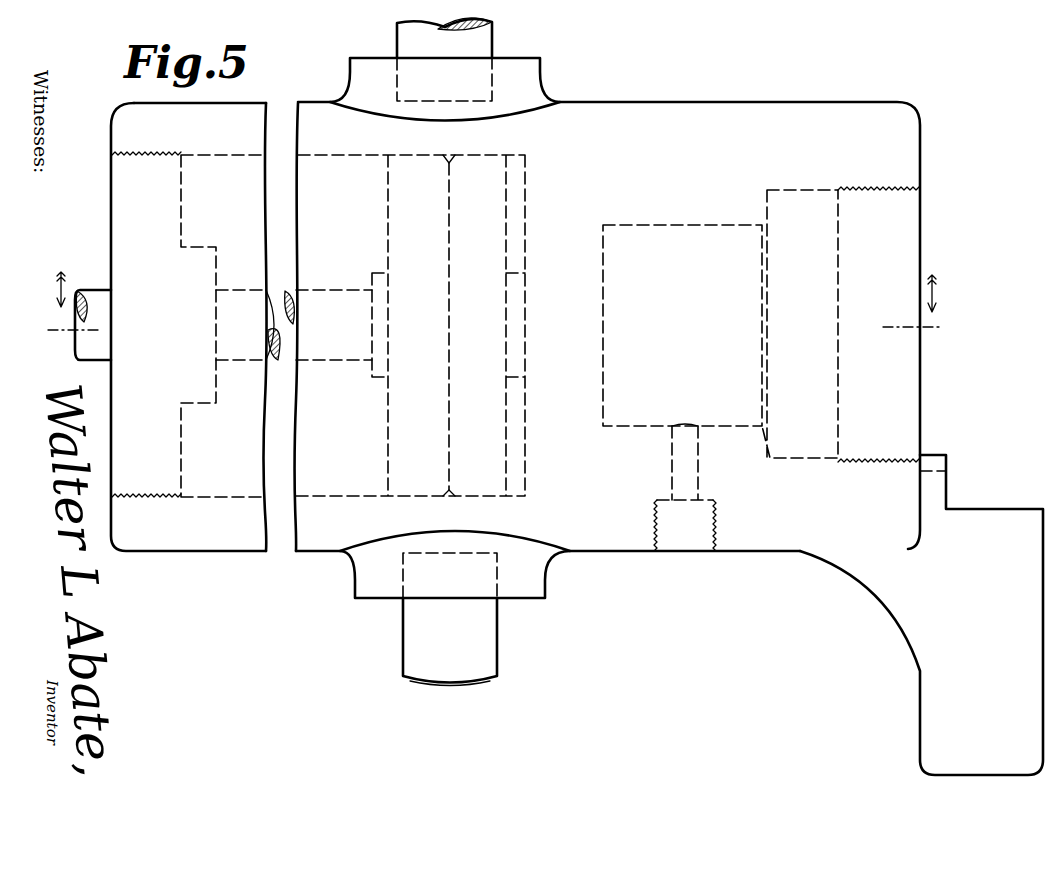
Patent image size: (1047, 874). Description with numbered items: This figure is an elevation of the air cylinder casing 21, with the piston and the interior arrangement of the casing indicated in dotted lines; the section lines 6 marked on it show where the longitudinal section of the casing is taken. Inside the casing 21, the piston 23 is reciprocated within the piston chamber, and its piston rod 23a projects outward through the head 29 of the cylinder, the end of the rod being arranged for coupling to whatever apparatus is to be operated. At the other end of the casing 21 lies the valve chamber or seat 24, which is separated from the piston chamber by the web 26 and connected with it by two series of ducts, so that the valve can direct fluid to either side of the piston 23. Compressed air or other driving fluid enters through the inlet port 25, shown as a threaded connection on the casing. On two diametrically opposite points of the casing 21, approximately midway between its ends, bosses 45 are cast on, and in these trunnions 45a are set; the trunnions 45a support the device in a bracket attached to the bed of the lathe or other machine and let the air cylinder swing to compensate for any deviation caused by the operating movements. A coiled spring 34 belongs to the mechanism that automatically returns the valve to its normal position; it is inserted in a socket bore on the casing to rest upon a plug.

The casing 21 is at (515, 326).
The piston 23 is at (405, 218).
The piston rod 23a is at (90, 365).
The valve chamber 24 is at (722, 227).
The inlet port 25 is at (672, 462).
The web 26 is at (583, 323).
The head 29 is at (158, 220).
The coiled spring 34 is at (921, 615).
The bosses 45 is at (547, 76).
The trunnions 45a is at (537, 653).
The section line 6 is at (493, 309).